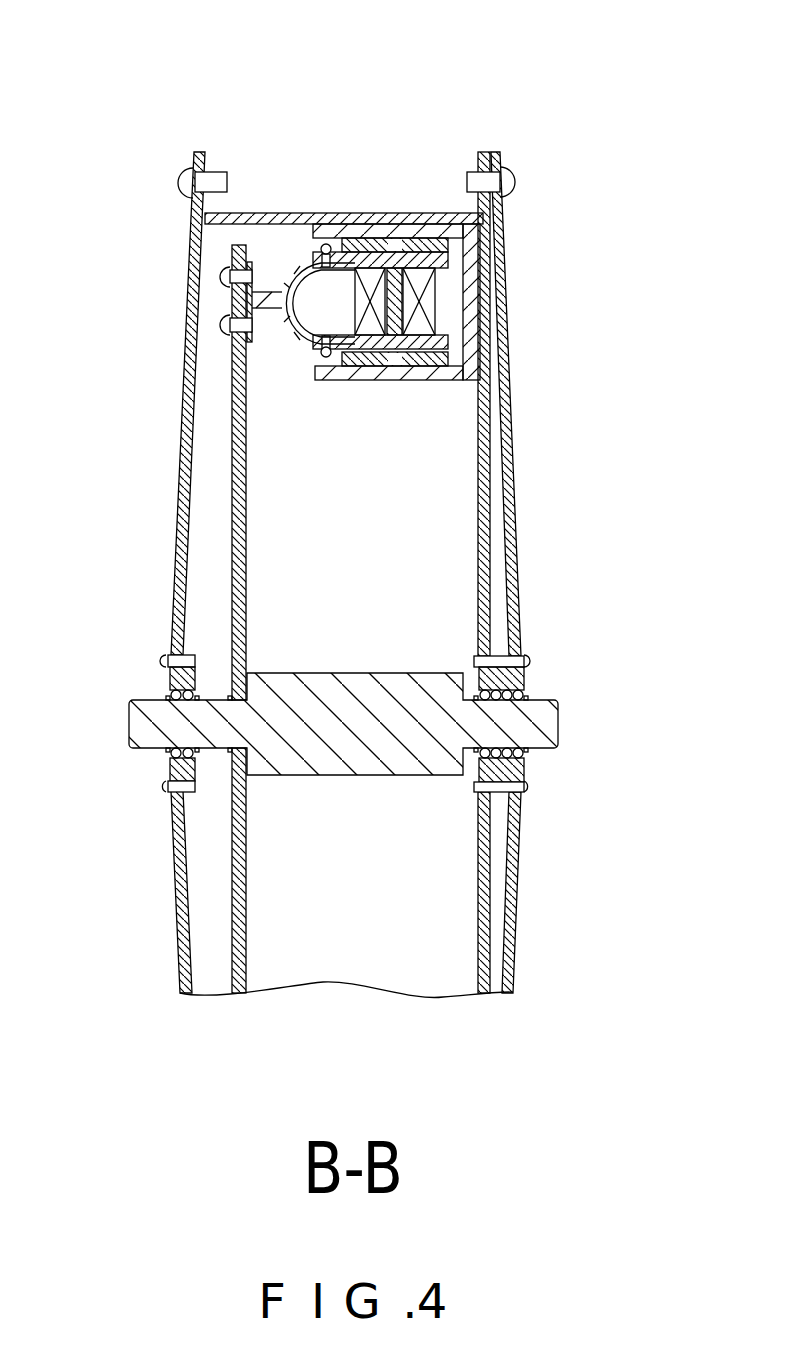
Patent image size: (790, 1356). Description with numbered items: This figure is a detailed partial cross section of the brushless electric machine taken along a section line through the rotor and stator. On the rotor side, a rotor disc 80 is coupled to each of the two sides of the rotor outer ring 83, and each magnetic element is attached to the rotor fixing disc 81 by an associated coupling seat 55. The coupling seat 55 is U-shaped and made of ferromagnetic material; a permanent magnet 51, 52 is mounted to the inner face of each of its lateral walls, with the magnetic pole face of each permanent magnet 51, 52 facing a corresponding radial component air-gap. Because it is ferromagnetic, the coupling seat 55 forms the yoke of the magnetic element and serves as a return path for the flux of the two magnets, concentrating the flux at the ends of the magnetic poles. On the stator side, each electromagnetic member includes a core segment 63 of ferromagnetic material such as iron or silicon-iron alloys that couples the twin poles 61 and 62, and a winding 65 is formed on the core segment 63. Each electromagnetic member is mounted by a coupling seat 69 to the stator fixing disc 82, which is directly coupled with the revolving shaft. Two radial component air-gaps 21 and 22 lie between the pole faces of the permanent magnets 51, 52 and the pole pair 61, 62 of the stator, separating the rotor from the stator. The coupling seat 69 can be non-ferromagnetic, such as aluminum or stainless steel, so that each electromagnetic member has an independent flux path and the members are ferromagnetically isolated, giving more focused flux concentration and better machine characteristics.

The radial component air-gap 21 is at (450, 250).
The radial component air-gap 22 is at (452, 350).
The permanent magnet 51 is at (413, 238).
The permanent magnet 52 is at (413, 358).
The coupling seat 55 is at (475, 295).
The pole 61 is at (385, 263).
The pole 62 is at (395, 342).
The core segment 63 is at (393, 303).
The winding 65 is at (372, 280).
The coupling seat 69 is at (263, 305).
The rotor disc 80 is at (182, 512).
The rotor fixing disc 81 is at (485, 433).
The stator fixing disc 82 is at (237, 558).
The rotor outer ring 83 is at (272, 214).